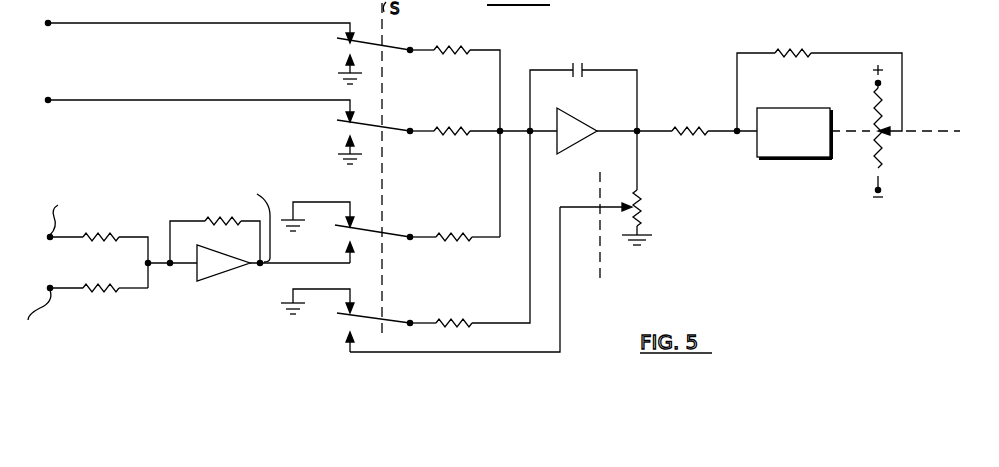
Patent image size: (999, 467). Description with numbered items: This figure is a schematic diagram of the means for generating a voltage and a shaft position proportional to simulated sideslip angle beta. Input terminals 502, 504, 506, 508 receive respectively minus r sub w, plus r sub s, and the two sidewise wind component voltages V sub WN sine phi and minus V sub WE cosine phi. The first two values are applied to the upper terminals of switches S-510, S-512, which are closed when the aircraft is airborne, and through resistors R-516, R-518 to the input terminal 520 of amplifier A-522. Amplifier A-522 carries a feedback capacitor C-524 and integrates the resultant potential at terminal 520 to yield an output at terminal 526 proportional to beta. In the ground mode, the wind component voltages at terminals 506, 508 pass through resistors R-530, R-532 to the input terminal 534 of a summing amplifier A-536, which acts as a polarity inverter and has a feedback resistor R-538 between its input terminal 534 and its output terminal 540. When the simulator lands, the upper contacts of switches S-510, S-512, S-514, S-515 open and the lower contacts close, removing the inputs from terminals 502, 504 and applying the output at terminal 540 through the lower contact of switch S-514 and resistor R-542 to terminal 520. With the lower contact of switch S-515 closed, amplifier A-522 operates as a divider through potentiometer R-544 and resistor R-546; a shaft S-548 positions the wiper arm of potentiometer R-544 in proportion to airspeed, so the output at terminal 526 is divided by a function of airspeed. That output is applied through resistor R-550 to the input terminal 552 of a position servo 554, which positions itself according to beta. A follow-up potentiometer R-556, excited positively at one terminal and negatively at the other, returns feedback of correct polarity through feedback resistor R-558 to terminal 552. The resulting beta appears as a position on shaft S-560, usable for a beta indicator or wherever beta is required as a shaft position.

The input terminal 502 is at (45, 24).
The input terminal 504 is at (45, 101).
The input terminal 506 is at (49, 240).
The input terminal 508 is at (50, 286).
The switch S-510 is at (348, 46).
The switch S-512 is at (343, 131).
The switch S-514 is at (342, 235).
The switch S-515 is at (344, 326).
The resistor R-516 is at (436, 50).
The resistor R-518 is at (436, 131).
The input terminal 520 is at (531, 133).
The amplifier A-522 is at (588, 119).
The feedback capacitor C-524 is at (568, 71).
The output terminal 526 is at (639, 129).
The resistor R-530 is at (84, 225).
The resistor R-532 is at (82, 289).
The input terminal 534 is at (150, 266).
The summing amplifier A-536 is at (210, 280).
The feedback resistor R-538 is at (204, 221).
The output terminal 540 is at (262, 265).
The resistor R-542 is at (438, 237).
The potentiometer R-544 is at (642, 194).
The resistor R-546 is at (438, 323).
The shaft S-548 is at (601, 257).
The resistor R-550 is at (674, 134).
The input terminal 552 is at (737, 125).
The position servo 554 is at (782, 160).
The follow-up potentiometer R-556 is at (884, 167).
The feedback resistor R-558 is at (782, 55).
The shaft S-560 is at (873, 128).